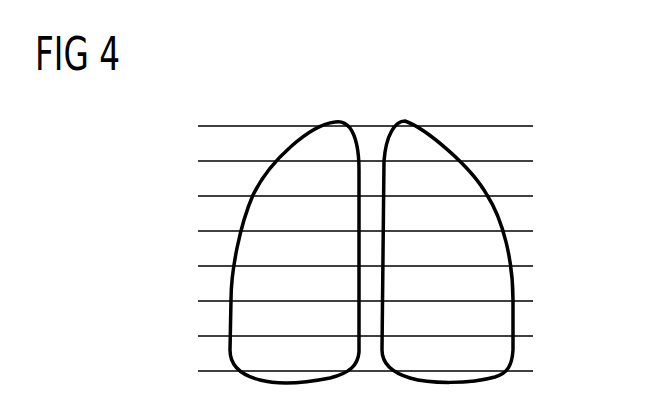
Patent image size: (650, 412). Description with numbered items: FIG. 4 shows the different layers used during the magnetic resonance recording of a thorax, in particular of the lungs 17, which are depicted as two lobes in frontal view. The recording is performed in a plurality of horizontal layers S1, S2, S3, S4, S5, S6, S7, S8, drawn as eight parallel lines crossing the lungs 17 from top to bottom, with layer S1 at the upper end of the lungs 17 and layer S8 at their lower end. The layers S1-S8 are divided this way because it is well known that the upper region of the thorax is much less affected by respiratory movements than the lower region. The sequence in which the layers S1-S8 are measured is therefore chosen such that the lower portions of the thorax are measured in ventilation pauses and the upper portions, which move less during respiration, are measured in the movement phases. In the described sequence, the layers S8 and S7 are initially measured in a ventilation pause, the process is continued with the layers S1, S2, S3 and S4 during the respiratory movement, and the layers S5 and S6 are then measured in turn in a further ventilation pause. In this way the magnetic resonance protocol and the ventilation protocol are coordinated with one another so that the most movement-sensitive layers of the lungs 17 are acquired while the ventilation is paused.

The lungs 17 is at (335, 120).
The layer S1 is at (349, 127).
The layer S2 is at (349, 162).
The layer S3 is at (349, 197).
The layer S4 is at (349, 232).
The layer S5 is at (349, 267).
The layer S6 is at (349, 302).
The layer S7 is at (349, 337).
The layer S8 is at (349, 372).